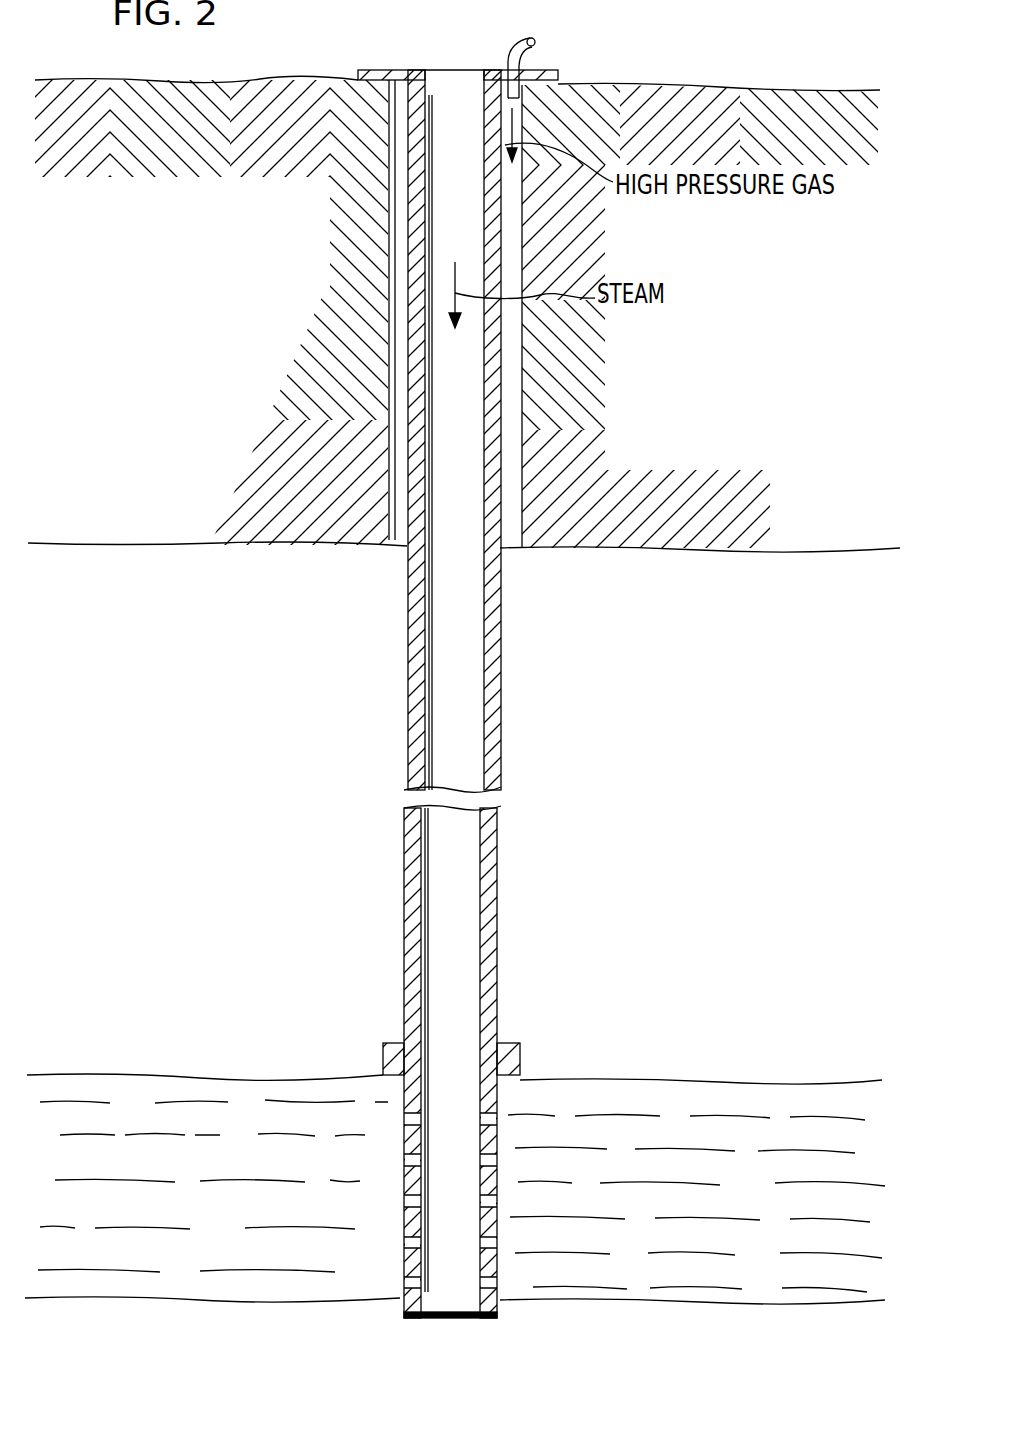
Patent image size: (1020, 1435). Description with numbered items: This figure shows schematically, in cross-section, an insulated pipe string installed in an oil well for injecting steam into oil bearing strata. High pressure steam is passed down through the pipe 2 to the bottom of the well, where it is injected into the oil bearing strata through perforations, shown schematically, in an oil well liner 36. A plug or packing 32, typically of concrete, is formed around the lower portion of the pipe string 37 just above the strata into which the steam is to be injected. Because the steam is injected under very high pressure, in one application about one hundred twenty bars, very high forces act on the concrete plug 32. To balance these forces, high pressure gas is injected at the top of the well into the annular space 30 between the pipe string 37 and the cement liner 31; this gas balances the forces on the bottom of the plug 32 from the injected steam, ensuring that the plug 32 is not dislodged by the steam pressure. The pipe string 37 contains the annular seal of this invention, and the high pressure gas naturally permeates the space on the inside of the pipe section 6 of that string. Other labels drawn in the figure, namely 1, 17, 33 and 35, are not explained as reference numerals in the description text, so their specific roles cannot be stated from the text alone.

The conduit 1 is at (365, 281).
The pipe section 6 is at (388, 82).
The wellhead flange 17 is at (417, 70).
The pipe 2 is at (432, 106).
The high pressure gas inlet pipe 33 is at (521, 36).
The annular space 30 is at (511, 377).
The cement liner 31 is at (523, 410).
The casing interior 35 is at (465, 612).
The pipe string 37 is at (406, 780).
The plug or packing 32 is at (520, 1043).
The oil well liner 36 is at (385, 1112).